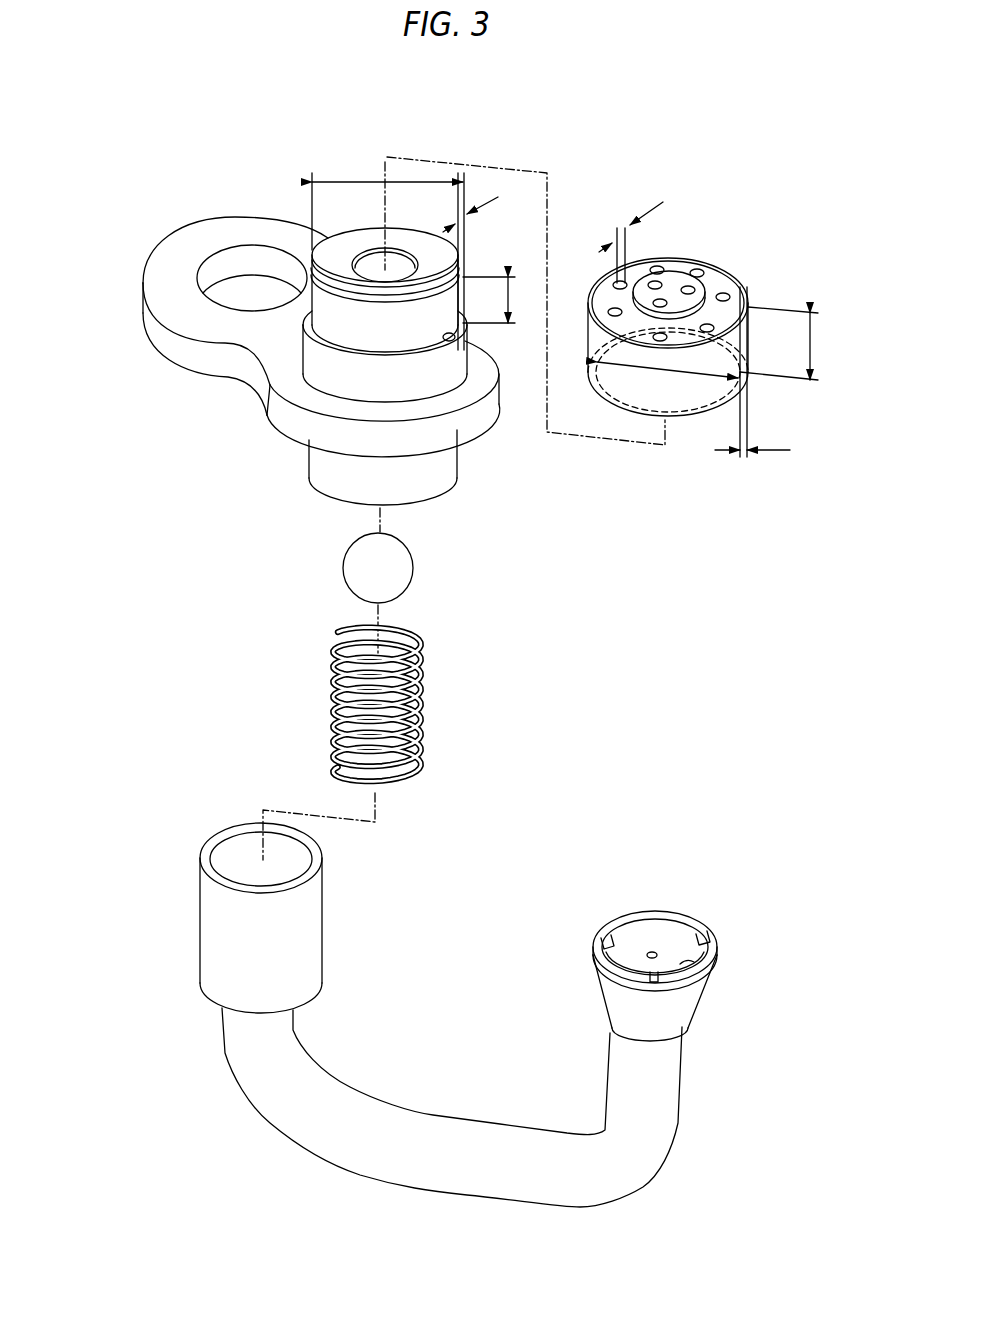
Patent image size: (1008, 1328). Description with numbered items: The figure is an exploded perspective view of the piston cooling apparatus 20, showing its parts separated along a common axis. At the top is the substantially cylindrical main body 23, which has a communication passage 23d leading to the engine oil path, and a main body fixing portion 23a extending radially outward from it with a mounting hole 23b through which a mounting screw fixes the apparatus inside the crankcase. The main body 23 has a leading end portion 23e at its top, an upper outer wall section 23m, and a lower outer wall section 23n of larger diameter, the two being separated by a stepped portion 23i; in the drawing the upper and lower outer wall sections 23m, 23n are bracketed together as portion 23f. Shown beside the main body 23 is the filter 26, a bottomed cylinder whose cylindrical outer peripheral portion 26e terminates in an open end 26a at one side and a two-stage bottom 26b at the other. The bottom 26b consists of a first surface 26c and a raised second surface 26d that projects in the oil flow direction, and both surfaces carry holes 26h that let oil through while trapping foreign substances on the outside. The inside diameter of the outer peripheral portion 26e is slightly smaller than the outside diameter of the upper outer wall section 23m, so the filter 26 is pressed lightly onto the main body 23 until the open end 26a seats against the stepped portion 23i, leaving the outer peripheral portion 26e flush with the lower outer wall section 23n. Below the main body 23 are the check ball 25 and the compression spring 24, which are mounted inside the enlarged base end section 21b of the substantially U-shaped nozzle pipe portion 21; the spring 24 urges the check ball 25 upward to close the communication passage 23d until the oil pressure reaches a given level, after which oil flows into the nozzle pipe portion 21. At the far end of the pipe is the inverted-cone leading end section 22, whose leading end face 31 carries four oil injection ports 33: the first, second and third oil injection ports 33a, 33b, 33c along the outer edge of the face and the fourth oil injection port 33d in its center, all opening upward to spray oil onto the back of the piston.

The piston cooling apparatus 20 is at (216, 578).
The nozzle pipe portion 21 is at (467, 1117).
The base end section 21b is at (322, 932).
The leading end section 22 is at (621, 916).
The main body 23 is at (367, 222).
The main body fixing portion 23a is at (208, 230).
The mounting hole 23b is at (253, 263).
The communication passage 23d is at (397, 262).
The leading end portion 23e is at (335, 268).
The flange portion 23f is at (538, 477).
The stepped portion 23i is at (408, 338).
The upper outer wall section 23m is at (402, 387).
The lower outer wall section 23n is at (450, 340).
The compression spring 24 is at (423, 680).
The check ball 25 is at (407, 567).
The filter 26 is at (749, 293).
The open end 26a is at (687, 412).
The bottom 26b is at (670, 225).
The first surface 26c is at (720, 280).
The second surface 26d is at (673, 280).
The outer peripheral portion 26e is at (723, 358).
The holes 26h is at (612, 293).
The leading end face 31 is at (663, 935).
The oil injection ports 33 is at (791, 913).
The first oil injection port 33a is at (687, 960).
The second oil injection port 33b is at (707, 940).
The third oil injection port 33c is at (673, 967).
The fourth oil injection port 33d is at (657, 948).